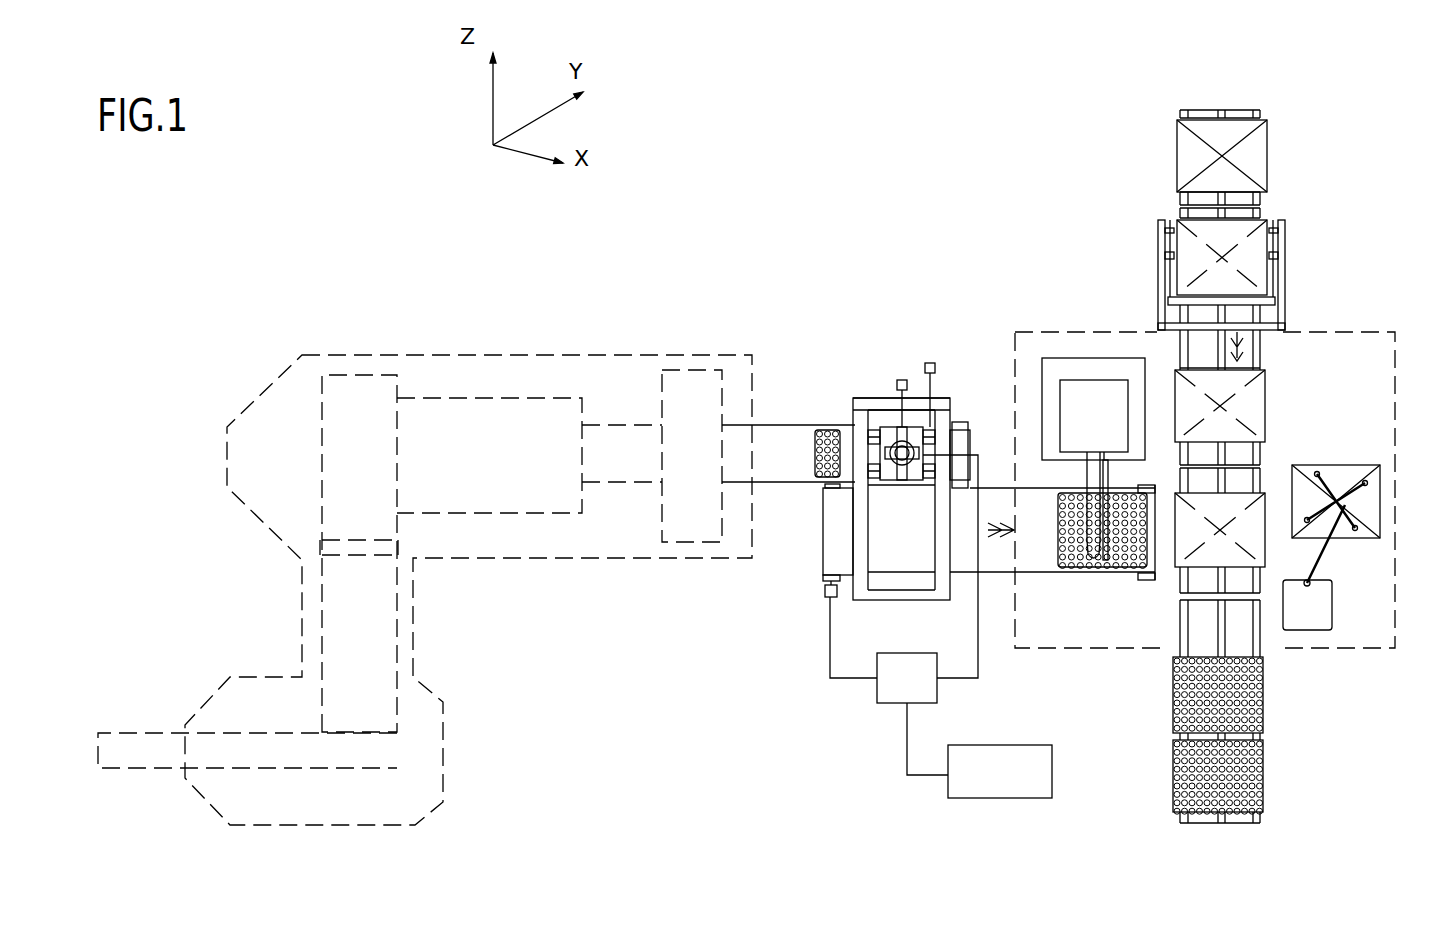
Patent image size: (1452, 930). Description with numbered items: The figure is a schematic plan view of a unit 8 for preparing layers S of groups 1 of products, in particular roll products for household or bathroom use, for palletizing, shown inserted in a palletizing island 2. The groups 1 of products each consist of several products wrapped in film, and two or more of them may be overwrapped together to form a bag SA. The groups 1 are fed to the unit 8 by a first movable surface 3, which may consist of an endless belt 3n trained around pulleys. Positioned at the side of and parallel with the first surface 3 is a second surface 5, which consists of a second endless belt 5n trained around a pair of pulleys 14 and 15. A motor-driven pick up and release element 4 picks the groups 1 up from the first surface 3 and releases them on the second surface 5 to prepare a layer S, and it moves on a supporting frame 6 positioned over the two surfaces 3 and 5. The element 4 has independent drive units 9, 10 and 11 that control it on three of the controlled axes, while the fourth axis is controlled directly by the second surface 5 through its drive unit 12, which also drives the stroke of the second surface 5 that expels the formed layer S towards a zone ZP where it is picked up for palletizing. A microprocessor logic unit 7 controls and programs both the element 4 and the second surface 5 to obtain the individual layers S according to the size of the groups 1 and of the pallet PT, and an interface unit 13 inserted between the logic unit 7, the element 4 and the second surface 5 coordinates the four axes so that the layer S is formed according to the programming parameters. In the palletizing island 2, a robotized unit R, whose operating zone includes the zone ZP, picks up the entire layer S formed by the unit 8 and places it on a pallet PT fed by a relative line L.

The groups of products 1 is at (823, 430).
The palletizing island 2 is at (1380, 312).
The first movable surface 3 is at (775, 422).
The endless belt 3n is at (767, 443).
The motor-driven pick up and release element 4 is at (873, 402).
The second surface 5 is at (823, 525).
The second endless belt 5n is at (899, 555).
The supporting frame 6 is at (876, 427).
The microprocessor logic unit 7 is at (979, 750).
The unit 8 is at (883, 389).
The drive unit 9 is at (932, 363).
The drive unit 10 is at (914, 450).
The drive unit 11 is at (904, 380).
The drive unit 12 is at (822, 598).
The interface unit 13 is at (904, 579).
The pulley 14 is at (823, 578).
The pulley 15 is at (1148, 578).
The bag SA is at (808, 457).
The robotized unit R is at (1055, 382).
The layer S is at (1113, 568).
The pick-up zone ZP is at (1078, 572).
The pallet PT is at (1183, 395).
The line L is at (1290, 375).